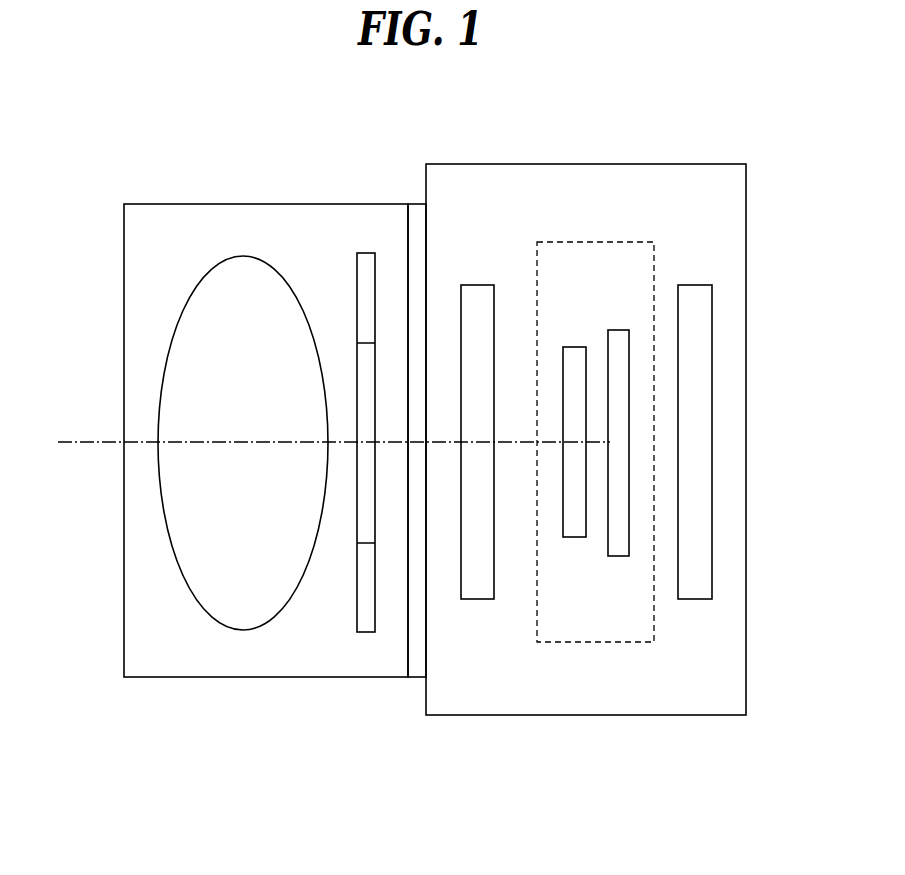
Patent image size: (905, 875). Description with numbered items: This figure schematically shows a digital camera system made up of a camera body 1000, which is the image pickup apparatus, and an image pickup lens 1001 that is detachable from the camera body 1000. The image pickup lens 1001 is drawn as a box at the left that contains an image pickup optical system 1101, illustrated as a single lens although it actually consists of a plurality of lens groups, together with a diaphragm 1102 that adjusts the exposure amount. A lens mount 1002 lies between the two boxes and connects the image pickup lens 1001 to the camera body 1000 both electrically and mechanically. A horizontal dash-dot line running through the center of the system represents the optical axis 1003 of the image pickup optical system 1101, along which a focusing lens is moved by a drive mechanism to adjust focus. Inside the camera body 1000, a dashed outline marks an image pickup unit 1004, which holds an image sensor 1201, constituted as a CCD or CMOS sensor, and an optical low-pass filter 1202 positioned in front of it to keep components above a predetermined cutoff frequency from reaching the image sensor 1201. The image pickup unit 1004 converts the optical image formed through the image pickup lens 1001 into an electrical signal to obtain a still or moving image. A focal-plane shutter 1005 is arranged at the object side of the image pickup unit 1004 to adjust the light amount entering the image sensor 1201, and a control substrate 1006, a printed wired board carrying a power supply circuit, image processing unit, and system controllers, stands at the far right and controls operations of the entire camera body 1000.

The camera body 1000 is at (740, 164).
The image pickup lens 1001 is at (221, 204).
The lens mount 1002 is at (418, 204).
The optical axis 1003 is at (90, 441).
The image pickup unit 1004 is at (575, 242).
The focal-plane shutter 1005 is at (478, 285).
The control substrate 1006 is at (694, 285).
The image pickup optical system 1101 is at (229, 610).
The diaphragm 1102 is at (366, 612).
The image sensor 1201 is at (619, 556).
The optical low-pass filter 1202 is at (575, 537).